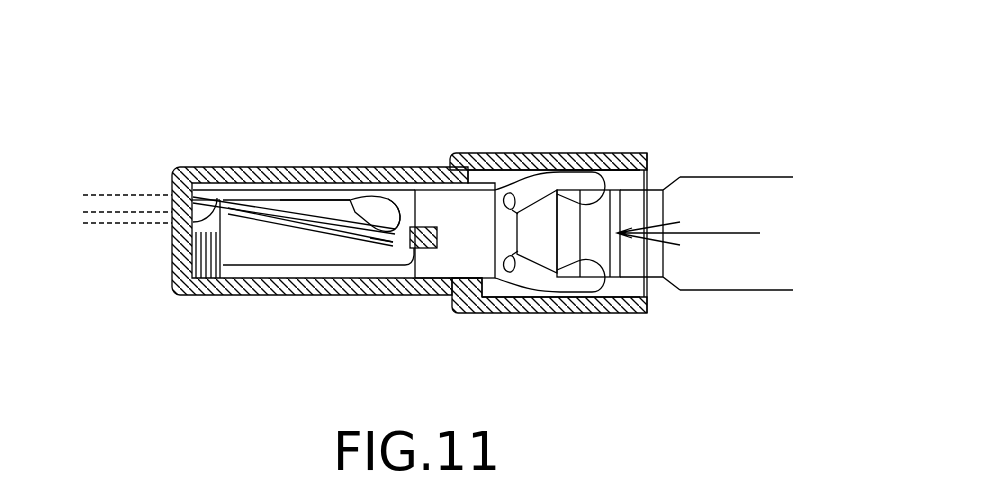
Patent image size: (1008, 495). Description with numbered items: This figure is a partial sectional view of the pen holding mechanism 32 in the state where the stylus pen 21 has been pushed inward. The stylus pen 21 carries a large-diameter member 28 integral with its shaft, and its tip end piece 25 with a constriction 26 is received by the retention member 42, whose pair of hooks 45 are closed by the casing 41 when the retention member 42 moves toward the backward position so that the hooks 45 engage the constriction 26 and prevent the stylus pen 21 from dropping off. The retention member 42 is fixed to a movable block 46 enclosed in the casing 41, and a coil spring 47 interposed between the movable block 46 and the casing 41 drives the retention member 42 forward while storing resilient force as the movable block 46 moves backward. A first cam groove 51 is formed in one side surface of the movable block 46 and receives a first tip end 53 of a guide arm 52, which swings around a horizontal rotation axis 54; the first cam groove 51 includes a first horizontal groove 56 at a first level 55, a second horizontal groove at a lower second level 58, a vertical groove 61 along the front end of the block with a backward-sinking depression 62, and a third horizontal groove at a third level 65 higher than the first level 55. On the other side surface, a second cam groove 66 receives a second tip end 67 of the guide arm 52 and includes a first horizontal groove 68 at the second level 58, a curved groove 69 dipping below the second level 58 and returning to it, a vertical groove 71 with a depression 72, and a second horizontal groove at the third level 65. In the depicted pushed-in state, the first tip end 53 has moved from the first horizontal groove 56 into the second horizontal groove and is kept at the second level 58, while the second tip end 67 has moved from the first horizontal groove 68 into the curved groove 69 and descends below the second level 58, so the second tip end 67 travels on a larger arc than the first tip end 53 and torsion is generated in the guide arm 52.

The stylus pen 21 is at (764, 163).
The tip end piece 25 is at (547, 265).
The constriction 26 is at (568, 190).
The large-diameter member 28 is at (740, 177).
The pen holding mechanism 32 is at (238, 70).
The casing 41 is at (647, 153).
The retention member 42 is at (588, 176).
The hooks 45 is at (538, 182).
The movable block 46 is at (481, 280).
The coil spring 47 is at (202, 273).
The first cam groove 51 is at (294, 162).
The guide arm 52 is at (232, 200).
The first tip end 53 is at (402, 226).
The rotation axis 54 is at (195, 198).
The first level 55 is at (98, 213).
The first horizontal groove 56 is at (244, 214).
The second level 58 is at (107, 221).
The vertical groove 61 is at (359, 267).
The depression 62 is at (330, 180).
The third level 65 is at (121, 197).
The second cam groove 66 is at (273, 197).
The second tip end 67 is at (441, 239).
The first horizontal groove 68 is at (295, 220).
The curved groove 69 is at (393, 232).
The vertical groove 71 is at (415, 278).
The depression 72 is at (415, 192).